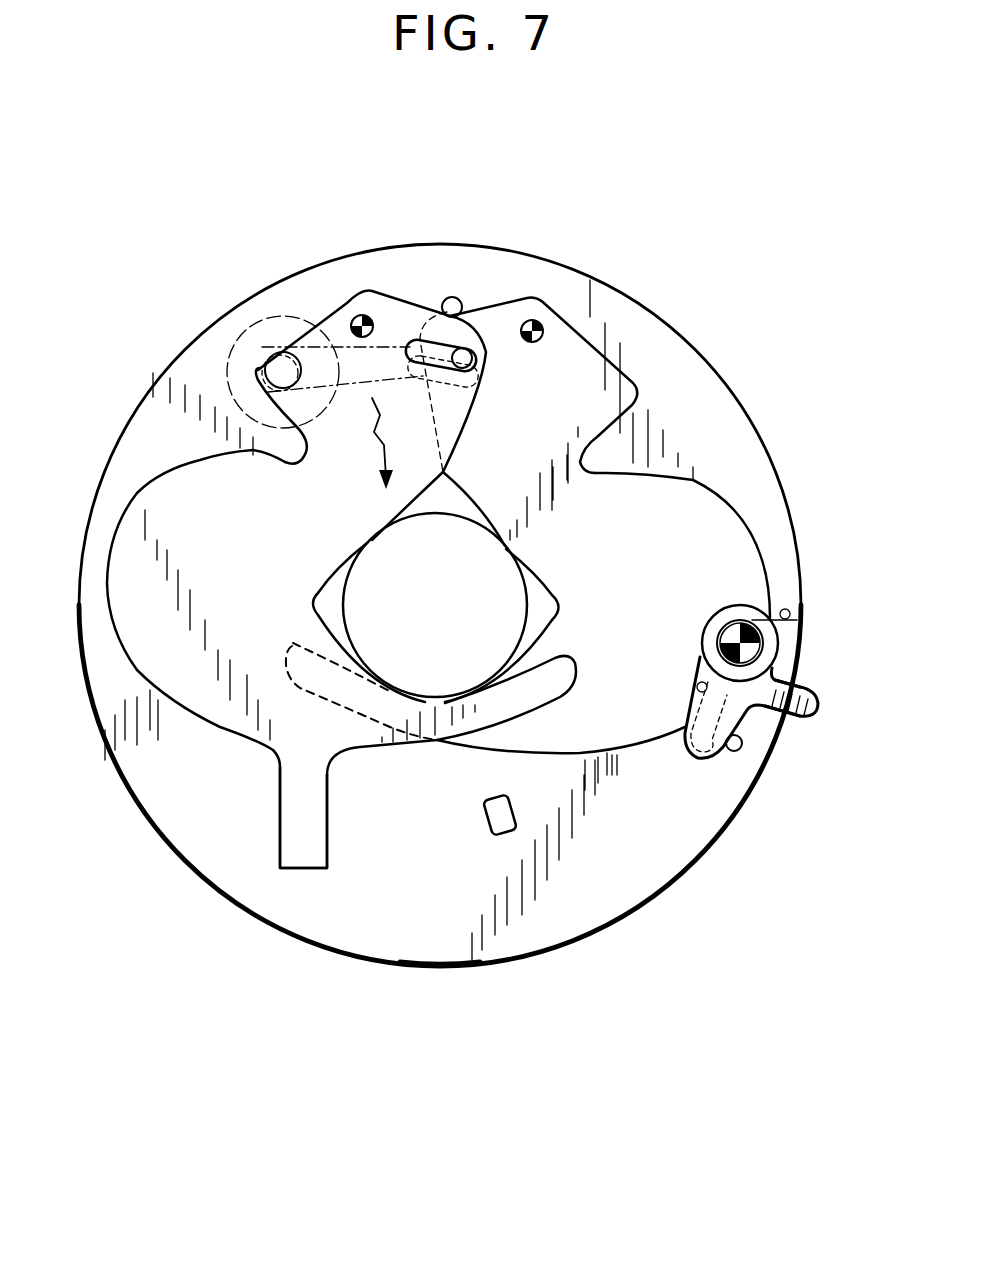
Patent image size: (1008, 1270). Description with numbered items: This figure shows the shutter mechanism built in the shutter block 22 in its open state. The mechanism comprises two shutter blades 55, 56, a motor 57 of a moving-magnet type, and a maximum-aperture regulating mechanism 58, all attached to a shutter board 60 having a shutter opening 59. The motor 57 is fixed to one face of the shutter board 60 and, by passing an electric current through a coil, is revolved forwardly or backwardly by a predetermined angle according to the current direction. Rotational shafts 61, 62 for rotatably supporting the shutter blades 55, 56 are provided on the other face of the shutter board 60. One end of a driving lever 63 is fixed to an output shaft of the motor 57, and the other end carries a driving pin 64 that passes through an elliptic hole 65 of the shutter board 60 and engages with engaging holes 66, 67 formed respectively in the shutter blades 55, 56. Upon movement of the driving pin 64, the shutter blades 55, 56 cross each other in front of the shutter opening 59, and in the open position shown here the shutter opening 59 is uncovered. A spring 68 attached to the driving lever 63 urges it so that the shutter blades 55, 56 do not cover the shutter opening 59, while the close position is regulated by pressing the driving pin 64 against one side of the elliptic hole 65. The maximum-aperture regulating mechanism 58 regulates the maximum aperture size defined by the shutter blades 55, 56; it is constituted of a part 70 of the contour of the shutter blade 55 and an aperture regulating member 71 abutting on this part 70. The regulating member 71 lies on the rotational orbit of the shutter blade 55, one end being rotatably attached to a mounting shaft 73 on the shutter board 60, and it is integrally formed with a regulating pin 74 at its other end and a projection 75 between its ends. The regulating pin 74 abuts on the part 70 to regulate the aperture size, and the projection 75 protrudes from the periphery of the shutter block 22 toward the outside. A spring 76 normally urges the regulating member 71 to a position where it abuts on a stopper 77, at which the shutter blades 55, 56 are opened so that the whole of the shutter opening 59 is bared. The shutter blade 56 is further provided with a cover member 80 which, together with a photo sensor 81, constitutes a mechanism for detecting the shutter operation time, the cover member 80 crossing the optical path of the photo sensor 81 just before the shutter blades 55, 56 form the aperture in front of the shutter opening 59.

The shutter block 22 is at (716, 358).
The shutter blade 55 is at (716, 495).
The shutter blade 56 is at (178, 462).
The motor 57 is at (240, 333).
The maximum-aperture regulating mechanism 58 is at (763, 688).
The shutter opening 59 is at (440, 514).
The shutter board 60 is at (440, 947).
The rotational shaft 61 is at (535, 320).
The rotational shaft 62 is at (362, 314).
The driving lever 63 is at (347, 340).
The driving pin 64 is at (485, 362).
The elliptic hole 65 is at (453, 297).
The engaging hole 66 is at (408, 360).
The engaging hole 67 is at (460, 414).
The spring 68 is at (370, 400).
The part of contour of shutter blade 70 is at (660, 746).
The aperture regulating member 71 is at (688, 690).
The mounting shaft 73 is at (724, 610).
The regulating pin 74 is at (700, 762).
The projection 75 is at (820, 712).
The spring 76 is at (787, 608).
The stopper 77 is at (742, 748).
The cover member 80 is at (293, 829).
The photo sensor 81 is at (485, 818).